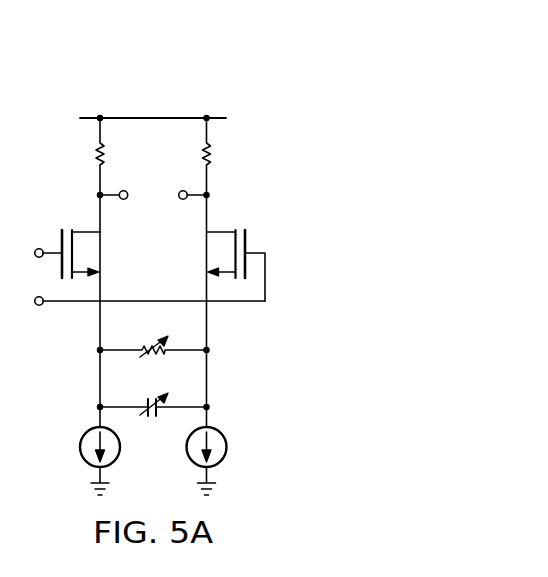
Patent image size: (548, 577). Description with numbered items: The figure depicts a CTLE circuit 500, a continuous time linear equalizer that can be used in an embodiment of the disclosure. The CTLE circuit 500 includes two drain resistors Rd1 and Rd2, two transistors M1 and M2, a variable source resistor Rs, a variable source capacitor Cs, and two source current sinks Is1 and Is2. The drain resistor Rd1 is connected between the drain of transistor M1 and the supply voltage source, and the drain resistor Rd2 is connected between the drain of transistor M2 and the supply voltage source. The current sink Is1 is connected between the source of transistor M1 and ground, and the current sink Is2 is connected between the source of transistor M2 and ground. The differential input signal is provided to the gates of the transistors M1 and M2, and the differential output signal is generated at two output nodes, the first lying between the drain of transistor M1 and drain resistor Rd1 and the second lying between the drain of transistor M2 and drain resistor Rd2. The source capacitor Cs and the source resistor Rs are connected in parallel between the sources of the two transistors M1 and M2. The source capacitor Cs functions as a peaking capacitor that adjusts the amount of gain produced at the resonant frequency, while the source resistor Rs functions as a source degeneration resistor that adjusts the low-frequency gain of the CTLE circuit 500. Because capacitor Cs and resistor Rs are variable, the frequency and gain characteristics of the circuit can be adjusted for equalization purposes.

The CTLE circuit 500 is at (197, 89).
The drain resistor Rd1 is at (82, 156).
The drain resistor Rd2 is at (226, 156).
The transistor M1 is at (79, 254).
The transistor M2 is at (224, 265).
The variable source resistor Rs is at (153, 336).
The variable source capacitor Cs is at (153, 395).
The source current sink Is1 is at (87, 461).
The source current sink Is2 is at (221, 461).